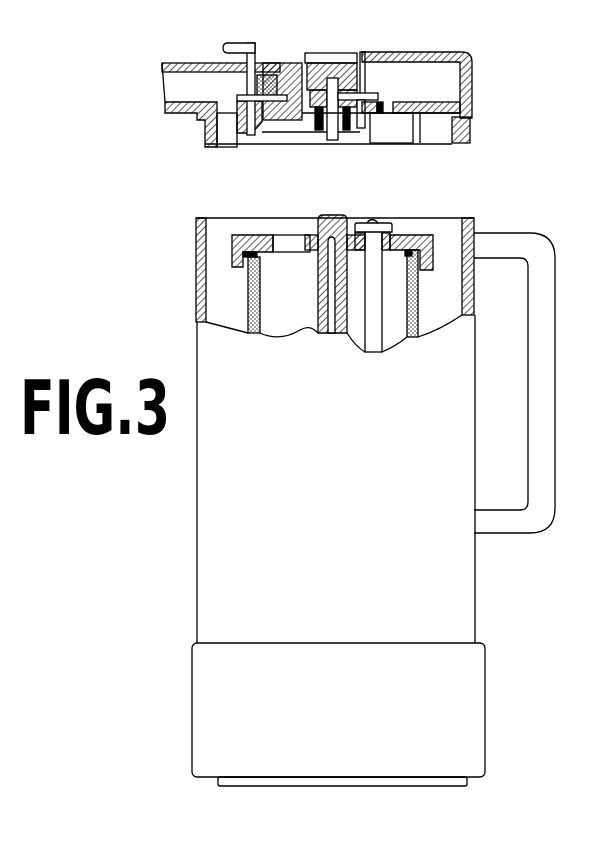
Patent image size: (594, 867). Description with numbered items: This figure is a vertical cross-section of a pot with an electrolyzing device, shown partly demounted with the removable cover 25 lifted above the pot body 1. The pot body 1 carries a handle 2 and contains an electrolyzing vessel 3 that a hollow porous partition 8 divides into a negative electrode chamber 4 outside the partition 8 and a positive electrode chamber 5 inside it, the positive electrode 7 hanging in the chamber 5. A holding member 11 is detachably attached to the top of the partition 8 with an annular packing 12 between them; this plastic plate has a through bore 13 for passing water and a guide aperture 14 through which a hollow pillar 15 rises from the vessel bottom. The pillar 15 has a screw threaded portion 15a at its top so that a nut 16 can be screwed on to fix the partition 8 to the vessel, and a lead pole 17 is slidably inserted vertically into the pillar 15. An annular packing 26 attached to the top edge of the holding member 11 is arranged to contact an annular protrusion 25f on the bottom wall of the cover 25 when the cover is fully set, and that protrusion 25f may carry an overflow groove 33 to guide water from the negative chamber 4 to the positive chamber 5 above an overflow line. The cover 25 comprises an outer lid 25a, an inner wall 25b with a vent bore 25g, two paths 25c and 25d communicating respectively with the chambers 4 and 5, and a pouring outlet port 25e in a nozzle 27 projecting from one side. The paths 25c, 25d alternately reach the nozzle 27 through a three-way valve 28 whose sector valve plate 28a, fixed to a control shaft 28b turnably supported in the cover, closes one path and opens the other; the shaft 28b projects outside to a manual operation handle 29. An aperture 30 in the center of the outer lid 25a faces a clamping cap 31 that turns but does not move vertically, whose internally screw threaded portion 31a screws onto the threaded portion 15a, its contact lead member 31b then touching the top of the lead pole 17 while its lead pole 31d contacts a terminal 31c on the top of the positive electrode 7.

The pot body 1 is at (197, 312).
The handle 2 is at (545, 352).
The electrolyzing vessel 3 is at (456, 275).
The negative electrode chamber 4 is at (444, 311).
The positive electrode chamber 5 is at (295, 333).
The positive electrode 7 is at (372, 312).
The porous partition 8 is at (254, 335).
The holding member 11 is at (238, 260).
The annular packing 12 is at (260, 258).
The through bore 13 is at (284, 235).
The guide aperture 14 is at (322, 262).
The hollow pillar 15 is at (360, 258).
The screw threaded portion 15a is at (368, 252).
The nut 16 is at (320, 226).
The lead pole 17 is at (332, 335).
The cover 25 is at (427, 33).
The outer lid 25a is at (444, 52).
The inner wall 25b is at (424, 101).
The path 25c is at (227, 138).
The path 25d is at (280, 108).
The pouring outlet port 25e is at (170, 88).
The annular protrusion 25f is at (250, 130).
The bore 25g is at (384, 128).
The annular packing 26 is at (246, 235).
The nozzle 27 is at (180, 114).
The three-way valve 28 is at (271, 18).
The sector valve plate 28a is at (245, 96).
The control shaft 28b is at (256, 45).
The manual operation handle 29 is at (224, 48).
The aperture 30 is at (363, 52).
The clamping cap 31 is at (324, 56).
The internally screw threaded portion 31a is at (320, 128).
The contact lead member 31b is at (333, 138).
The terminal 31c is at (371, 222).
The lead pole 31d is at (362, 99).
The overflow groove 33 is at (455, 125).